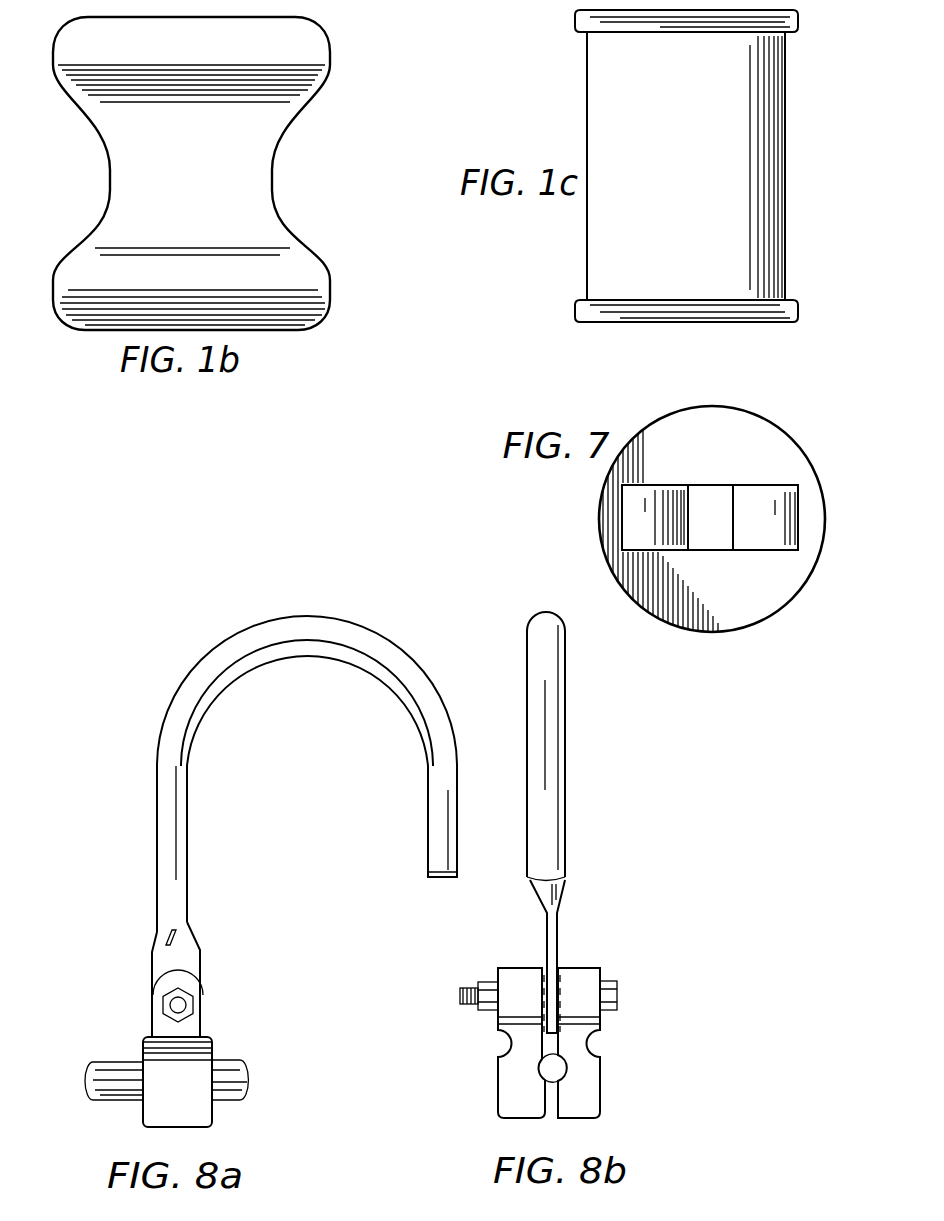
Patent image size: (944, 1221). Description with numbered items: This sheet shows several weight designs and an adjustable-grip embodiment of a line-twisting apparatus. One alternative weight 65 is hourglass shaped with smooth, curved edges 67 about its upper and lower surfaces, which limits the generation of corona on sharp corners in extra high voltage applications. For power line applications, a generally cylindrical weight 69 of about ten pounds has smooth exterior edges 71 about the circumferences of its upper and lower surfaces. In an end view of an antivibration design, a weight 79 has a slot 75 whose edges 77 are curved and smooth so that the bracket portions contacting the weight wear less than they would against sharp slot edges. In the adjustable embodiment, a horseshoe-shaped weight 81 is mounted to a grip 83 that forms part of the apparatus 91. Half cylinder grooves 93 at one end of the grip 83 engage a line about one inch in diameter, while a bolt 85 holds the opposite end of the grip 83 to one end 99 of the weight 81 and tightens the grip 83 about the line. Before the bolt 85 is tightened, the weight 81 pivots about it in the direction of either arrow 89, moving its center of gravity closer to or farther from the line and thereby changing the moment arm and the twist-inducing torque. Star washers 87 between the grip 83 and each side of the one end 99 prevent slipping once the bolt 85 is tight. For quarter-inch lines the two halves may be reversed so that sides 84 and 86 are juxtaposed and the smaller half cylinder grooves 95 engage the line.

In FIG. 1b, the weight 65 is at (188, 168).
In FIG. 1b, the curved edges 67 is at (320, 63).
In FIG. 1c, the cylindrical weight 69 is at (580, 116).
In FIG. 1c, the smooth exterior edges 71 is at (580, 22).
In FIG. 7, the slot 75 is at (697, 531).
In FIG. 7, the edges 77 is at (772, 495).
In FIG. 7, the weight 79 is at (695, 449).
In FIG. 8a, the weight 81 is at (187, 803).
In FIG. 8b, the weight 81 is at (555, 753).
In FIG. 8a, the grip 83 is at (165, 1098).
In FIG. 8b, the grip 83 is at (591, 1028).
In FIG. 8b, the side 84 is at (605, 1097).
In FIG. 8b, the bolt 85 is at (617, 998).
In FIG. 8b, the side 86 is at (500, 1100).
In FIG. 8b, the star washers 87 is at (540, 985).
In FIG. 8a, the arrow 89 is at (263, 594).
In FIG. 8a, the apparatus 91 is at (290, 958).
In FIG. 8b, the apparatus 91 is at (642, 858).
In FIG. 8b, the half cylinder grooves 93 is at (568, 1070).
In FIG. 8b, the half cylinder grooves 95 is at (507, 1042).
In FIG. 8a, the one end 99 is at (192, 958).
In FIG. 8b, the one end 99 is at (542, 947).